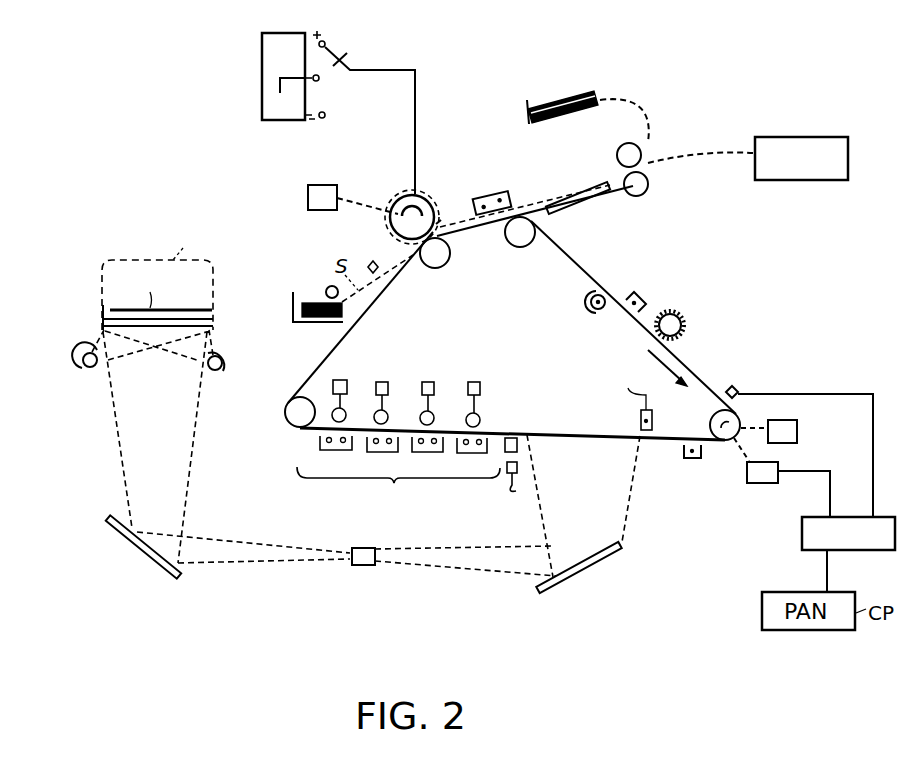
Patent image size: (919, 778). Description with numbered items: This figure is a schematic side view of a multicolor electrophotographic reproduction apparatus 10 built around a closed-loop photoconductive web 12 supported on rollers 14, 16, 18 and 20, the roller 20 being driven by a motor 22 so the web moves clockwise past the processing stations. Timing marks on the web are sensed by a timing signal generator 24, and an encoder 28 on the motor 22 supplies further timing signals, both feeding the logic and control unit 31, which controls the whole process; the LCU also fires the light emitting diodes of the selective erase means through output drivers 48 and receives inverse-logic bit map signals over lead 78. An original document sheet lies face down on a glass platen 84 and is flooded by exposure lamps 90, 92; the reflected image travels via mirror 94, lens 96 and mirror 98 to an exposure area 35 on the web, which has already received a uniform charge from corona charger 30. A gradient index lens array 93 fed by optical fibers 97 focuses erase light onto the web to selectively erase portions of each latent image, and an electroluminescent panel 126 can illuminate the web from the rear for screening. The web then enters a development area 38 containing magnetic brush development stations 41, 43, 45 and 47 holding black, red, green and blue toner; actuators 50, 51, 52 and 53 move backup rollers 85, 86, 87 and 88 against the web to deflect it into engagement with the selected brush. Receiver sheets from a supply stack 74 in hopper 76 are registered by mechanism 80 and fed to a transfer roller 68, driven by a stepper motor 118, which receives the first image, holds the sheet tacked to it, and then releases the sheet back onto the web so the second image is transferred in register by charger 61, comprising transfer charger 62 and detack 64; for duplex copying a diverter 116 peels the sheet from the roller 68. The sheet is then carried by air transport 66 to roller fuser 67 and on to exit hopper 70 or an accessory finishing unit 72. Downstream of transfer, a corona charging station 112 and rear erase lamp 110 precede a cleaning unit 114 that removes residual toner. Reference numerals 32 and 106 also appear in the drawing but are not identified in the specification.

The apparatus 10 is at (719, 287).
The photoconductive web 12 is at (592, 277).
The roller 14 is at (520, 247).
The roller 16 is at (435, 268).
The roller 18 is at (287, 426).
The roller 20 is at (710, 420).
The motor 22 is at (798, 430).
The timing signal generator 24 is at (733, 387).
The encoder 28 is at (757, 484).
The corona charger 30 is at (692, 459).
The logic and control unit 31 is at (256, 57).
The logic and control unit (LCU) 32 is at (896, 533).
The exposure area 35 is at (583, 441).
The development area 38 is at (398, 493).
The development station 41 is at (334, 452).
The development station 43 is at (385, 454).
The development station 45 is at (430, 454).
The development station 47 is at (478, 455).
The output drivers 48 is at (636, 370).
The actuator 50 is at (347, 385).
The actuator 51 is at (388, 386).
The actuator 52 is at (434, 388).
The actuator 53 is at (480, 388).
The charger 61 is at (499, 181).
The transfer charger 62 is at (477, 190).
The detack 64 is at (517, 196).
The air transport 66 is at (583, 204).
The roller fuser 67 is at (654, 187).
The transfer roller 68 is at (405, 195).
The exit hopper 70 is at (530, 108).
The accessory finishing unit 72 is at (849, 158).
The supply stack 74 is at (306, 302).
The hopper 76 is at (293, 306).
The lead 78 is at (328, 287).
The registration mechanism 80 is at (370, 261).
The glass platen 84 is at (214, 323).
The backup roller 85 is at (346, 419).
The backup roller 86 is at (388, 420).
The backup roller 87 is at (434, 421).
The backup roller 88 is at (480, 422).
The exposure lamp 90 is at (224, 366).
The exposure lamp 92 is at (80, 365).
The gradient index lens array 93 is at (519, 446).
The mirror 94 is at (150, 563).
The lens 96 is at (363, 565).
The optical fibers 97 is at (508, 493).
The mirror 98 is at (585, 566).
The optical path 106 is at (268, 542).
The rear erase lamp 110 is at (595, 313).
The corona charging station 112 is at (642, 297).
The cleaning unit 114 is at (686, 325).
The diverter 116 is at (443, 222).
The stepper motor 118 is at (306, 196).
The electroluminescent panel 126 is at (640, 417).